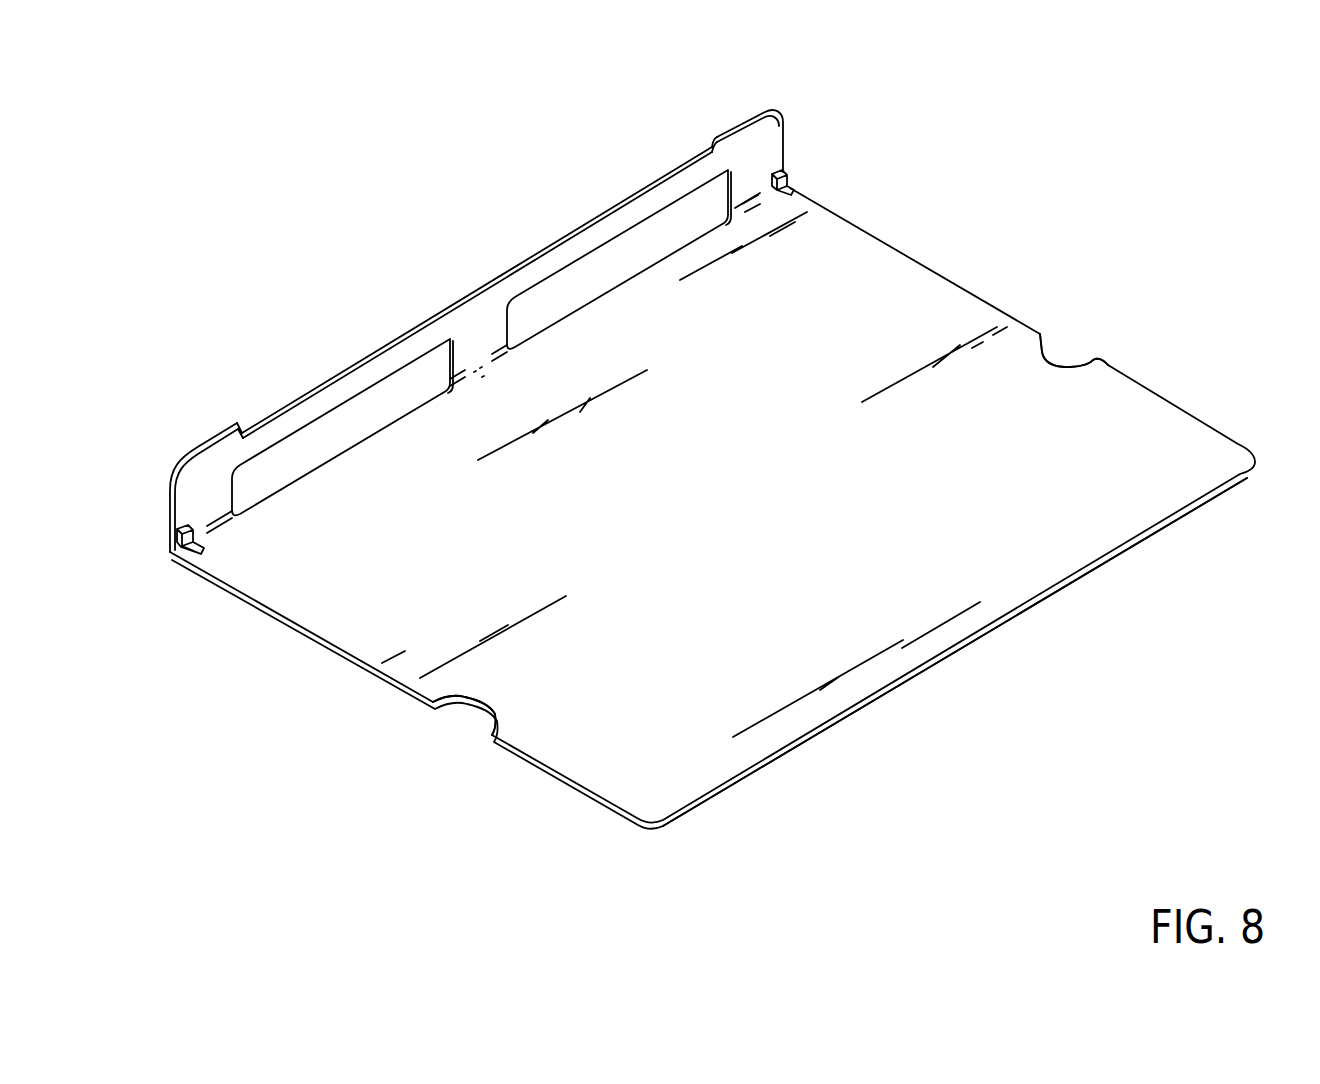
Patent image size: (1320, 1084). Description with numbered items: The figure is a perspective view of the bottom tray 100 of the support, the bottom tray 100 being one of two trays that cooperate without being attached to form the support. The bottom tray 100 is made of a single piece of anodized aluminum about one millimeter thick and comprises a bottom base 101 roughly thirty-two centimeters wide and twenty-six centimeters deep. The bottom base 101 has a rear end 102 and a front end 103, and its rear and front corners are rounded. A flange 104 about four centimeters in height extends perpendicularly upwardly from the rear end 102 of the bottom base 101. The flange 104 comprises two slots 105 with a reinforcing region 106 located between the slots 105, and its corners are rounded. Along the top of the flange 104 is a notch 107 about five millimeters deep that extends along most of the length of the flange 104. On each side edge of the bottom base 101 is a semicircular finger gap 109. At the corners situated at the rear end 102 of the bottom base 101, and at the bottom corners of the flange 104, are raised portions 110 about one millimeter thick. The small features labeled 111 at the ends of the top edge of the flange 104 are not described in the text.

The bottom tray 100 is at (1000, 268).
The bottom base 101 is at (398, 654).
The rear end 102 is at (617, 290).
The front end 103 is at (1157, 528).
The flange 104 is at (760, 142).
The slots 105 is at (650, 245).
The reinforcing region 106 is at (472, 342).
The notch 107 is at (550, 247).
The semicircular finger gaps 109 is at (1065, 352).
The raised portions 110 is at (780, 177).
The top edge notch 111 is at (716, 138).